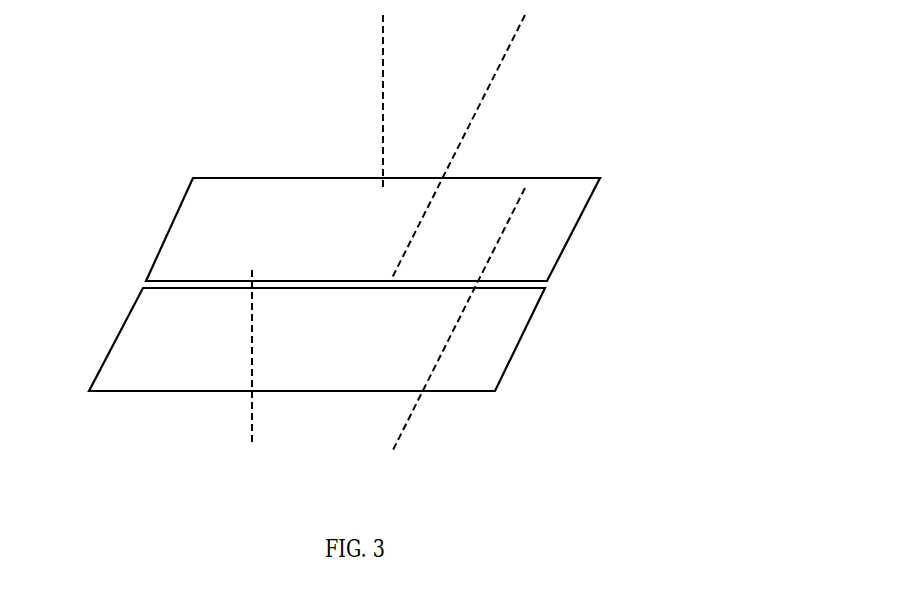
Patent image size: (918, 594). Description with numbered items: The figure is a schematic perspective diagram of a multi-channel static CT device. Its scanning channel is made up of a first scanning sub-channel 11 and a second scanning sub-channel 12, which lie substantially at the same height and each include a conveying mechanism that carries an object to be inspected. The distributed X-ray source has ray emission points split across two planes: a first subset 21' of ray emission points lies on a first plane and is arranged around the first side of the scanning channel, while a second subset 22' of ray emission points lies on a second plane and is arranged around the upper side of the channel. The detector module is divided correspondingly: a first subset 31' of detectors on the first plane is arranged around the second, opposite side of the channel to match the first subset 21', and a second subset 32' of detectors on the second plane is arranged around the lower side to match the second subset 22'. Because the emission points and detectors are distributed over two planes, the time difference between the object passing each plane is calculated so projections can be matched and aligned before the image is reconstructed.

The first scanning sub-channel 11 is at (178, 348).
The second scanning sub-channel 12 is at (265, 232).
The first subset of ray emission points 21' is at (327, 102).
The second subset of ray emission points 22' is at (497, 146).
The first subset of detectors 31' is at (208, 356).
The second subset of detectors 32' is at (510, 319).